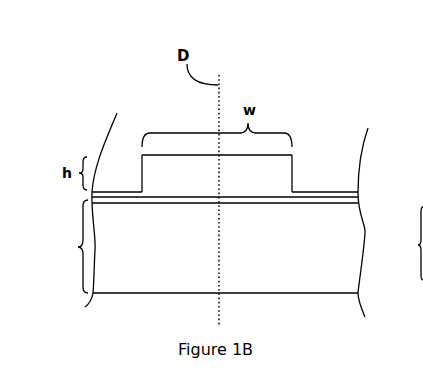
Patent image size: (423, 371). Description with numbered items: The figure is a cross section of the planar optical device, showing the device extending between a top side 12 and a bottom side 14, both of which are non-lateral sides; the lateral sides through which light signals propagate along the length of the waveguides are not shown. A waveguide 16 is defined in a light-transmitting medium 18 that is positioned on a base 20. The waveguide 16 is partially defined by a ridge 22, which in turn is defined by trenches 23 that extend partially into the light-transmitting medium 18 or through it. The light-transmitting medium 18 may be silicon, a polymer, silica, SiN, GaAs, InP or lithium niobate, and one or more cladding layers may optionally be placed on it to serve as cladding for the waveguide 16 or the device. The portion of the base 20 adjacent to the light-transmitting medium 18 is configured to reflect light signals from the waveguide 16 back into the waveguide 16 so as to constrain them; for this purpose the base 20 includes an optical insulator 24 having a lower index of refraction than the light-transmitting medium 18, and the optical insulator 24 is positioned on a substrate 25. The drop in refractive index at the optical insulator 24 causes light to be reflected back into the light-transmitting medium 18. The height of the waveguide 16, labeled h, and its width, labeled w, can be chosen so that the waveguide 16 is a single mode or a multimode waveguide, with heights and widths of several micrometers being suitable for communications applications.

The top side 12 is at (345, 118).
The bottom side 14 is at (317, 322).
The waveguide 16 is at (135, 151).
The light-transmitting medium 18 is at (333, 193).
The base 20 is at (240, 246).
The ridge 22 is at (298, 158).
The trenches 23 is at (93, 190).
The optical insulator 24 is at (127, 205).
The substrate 25 is at (118, 283).